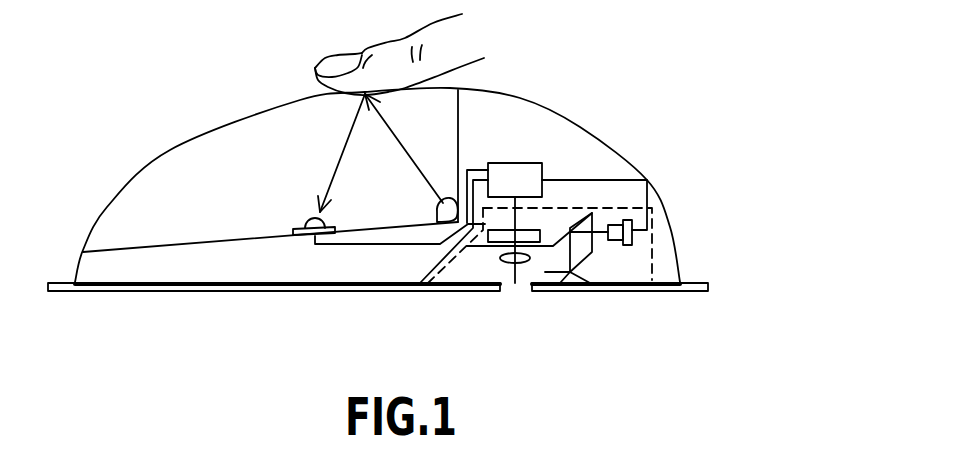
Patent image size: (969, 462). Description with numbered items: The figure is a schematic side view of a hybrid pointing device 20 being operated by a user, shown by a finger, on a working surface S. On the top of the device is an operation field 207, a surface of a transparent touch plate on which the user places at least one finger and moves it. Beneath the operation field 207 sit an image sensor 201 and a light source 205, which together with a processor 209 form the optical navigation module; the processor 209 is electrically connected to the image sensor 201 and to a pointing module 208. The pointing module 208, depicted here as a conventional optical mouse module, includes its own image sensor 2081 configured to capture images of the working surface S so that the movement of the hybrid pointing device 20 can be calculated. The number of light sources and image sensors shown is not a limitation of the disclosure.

The hybrid pointing device 20 is at (700, 32).
The image sensor 201 is at (293, 227).
The light source 205 is at (437, 212).
The operation field 207 is at (241, 116).
The pointing module 208 is at (652, 252).
The image sensor 2081 is at (540, 227).
The processor 209 is at (531, 163).
The working surface S is at (703, 283).